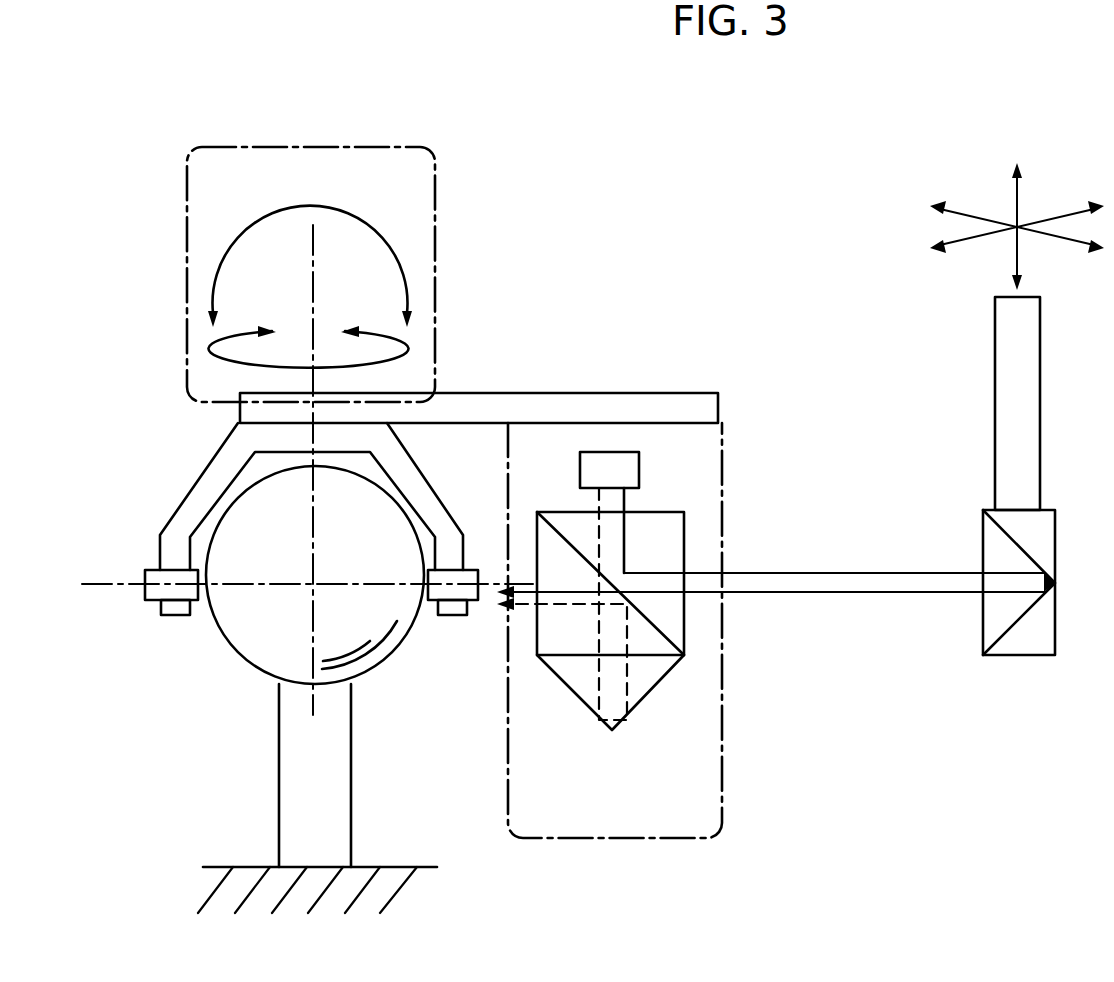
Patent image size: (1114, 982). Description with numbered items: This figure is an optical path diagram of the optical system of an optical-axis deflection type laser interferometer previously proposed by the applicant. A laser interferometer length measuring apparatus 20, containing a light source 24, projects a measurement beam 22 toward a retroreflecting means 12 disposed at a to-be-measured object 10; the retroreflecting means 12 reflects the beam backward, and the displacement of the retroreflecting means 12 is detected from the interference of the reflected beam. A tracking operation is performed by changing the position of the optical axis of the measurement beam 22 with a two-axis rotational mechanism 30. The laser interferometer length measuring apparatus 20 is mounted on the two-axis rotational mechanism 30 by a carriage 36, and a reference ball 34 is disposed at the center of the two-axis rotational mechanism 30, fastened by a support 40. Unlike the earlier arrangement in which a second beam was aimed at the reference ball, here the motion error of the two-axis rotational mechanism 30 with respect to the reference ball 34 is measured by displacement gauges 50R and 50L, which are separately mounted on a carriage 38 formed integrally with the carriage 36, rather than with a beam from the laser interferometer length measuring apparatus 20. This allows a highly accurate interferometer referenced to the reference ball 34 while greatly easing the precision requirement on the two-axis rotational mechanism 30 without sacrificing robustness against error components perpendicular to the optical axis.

The to-be-measured object 10 is at (1040, 422).
The retroreflecting means 12 is at (1018, 658).
The laser interferometer length measuring apparatus 20 is at (619, 840).
The measurement beam 22 is at (806, 595).
The light source 24 is at (639, 470).
The two-axis rotational mechanism 30 is at (292, 147).
The reference ball 34 is at (256, 658).
The carriage 36 is at (608, 396).
The carriage 38 is at (196, 483).
The support 40 is at (279, 832).
The displacement gauge 50L is at (157, 588).
The displacement gauge 50R is at (466, 588).